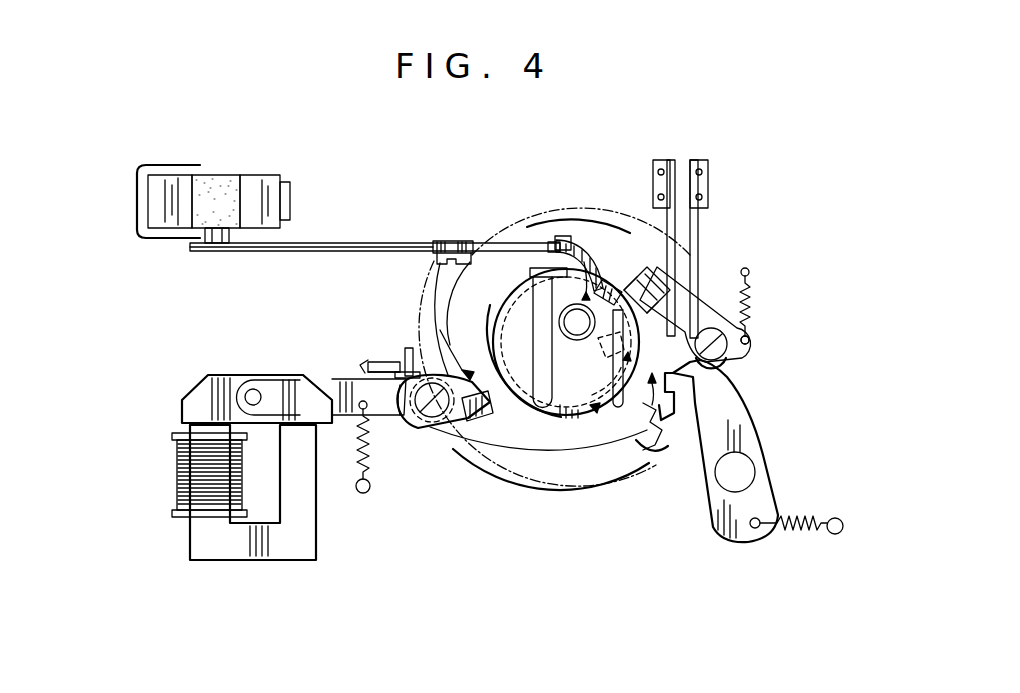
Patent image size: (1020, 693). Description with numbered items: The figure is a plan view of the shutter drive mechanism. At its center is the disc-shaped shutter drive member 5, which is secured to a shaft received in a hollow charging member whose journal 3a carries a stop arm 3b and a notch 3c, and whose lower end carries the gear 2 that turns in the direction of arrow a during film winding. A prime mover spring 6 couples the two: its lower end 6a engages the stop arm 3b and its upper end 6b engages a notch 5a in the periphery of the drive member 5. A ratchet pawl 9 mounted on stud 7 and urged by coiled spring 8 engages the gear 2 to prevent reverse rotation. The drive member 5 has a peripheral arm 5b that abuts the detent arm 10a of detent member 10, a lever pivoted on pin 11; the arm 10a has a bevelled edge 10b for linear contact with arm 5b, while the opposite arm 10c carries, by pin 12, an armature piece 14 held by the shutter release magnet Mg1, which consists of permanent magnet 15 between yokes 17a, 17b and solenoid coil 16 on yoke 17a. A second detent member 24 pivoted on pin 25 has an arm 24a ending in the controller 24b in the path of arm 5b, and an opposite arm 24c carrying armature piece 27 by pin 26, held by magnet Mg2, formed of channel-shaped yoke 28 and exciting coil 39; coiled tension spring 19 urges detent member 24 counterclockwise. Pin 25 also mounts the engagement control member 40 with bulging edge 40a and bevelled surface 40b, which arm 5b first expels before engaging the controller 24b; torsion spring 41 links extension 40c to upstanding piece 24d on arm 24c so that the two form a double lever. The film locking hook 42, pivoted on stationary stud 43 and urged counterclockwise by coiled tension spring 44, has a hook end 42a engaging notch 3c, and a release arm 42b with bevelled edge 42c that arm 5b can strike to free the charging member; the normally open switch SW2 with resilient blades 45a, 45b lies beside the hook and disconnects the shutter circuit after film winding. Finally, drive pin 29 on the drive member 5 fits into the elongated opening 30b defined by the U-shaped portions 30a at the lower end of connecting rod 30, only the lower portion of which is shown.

The gear 2 is at (677, 413).
The journal 3a is at (537, 452).
The stop arm 3b is at (598, 270).
The notch 3c is at (604, 278).
The shutter drive member 5 is at (518, 392).
The notch 5a is at (612, 374).
The arm 5b is at (562, 236).
The prime mover spring 6 is at (548, 358).
The lower end of spring 6a is at (578, 242).
The upper end of spring 6b is at (608, 348).
The stud 7 is at (756, 472).
The coiled spring 8 is at (802, 531).
The ratchet pawl 9 is at (730, 451).
The detent member 10 is at (375, 241).
The detent arm 10a is at (470, 223).
The edge 10b is at (552, 242).
The arm 10c is at (314, 252).
The pin 11 is at (438, 259).
The pin 12 is at (219, 244).
The armature piece 14 is at (291, 198).
The permanent magnet 15 is at (228, 180).
The solenoid coil 16 is at (140, 200).
The yoke 17a is at (152, 212).
The yoke 17b is at (266, 180).
The coiled tension spring 19 is at (347, 450).
The detent member 24 is at (346, 416).
The arm 24a is at (470, 442).
The controller 24b is at (502, 458).
The arm 24c is at (292, 378).
The upstanding piece 24d is at (375, 366).
The pin 25 is at (418, 420).
The pin 26 is at (251, 390).
The armature piece 27 is at (196, 396).
The channel-shaped yoke 28 is at (194, 542).
The drive pin 29 is at (560, 323).
The connecting rod 30 is at (530, 272).
The U-shaped portions 30a is at (624, 468).
The elongated opening 30b is at (656, 452).
The exciting coil 39 is at (182, 462).
The engagement control member 40 is at (432, 430).
The bulging edge 40a is at (408, 372).
The bevelled surface 40b is at (409, 348).
The extension 40c is at (386, 362).
The torsion spring 41 is at (400, 408).
The film locking hook 42 is at (687, 287).
The hook end 42a is at (645, 267).
The release arm 42b is at (672, 290).
The bevelled edge 42c is at (678, 270).
The stationary stud 43 is at (736, 360).
The coiled tension spring 44 is at (752, 302).
The resilient blade 45a is at (670, 160).
The resilient blade 45b is at (698, 205).
The arrow a is at (652, 426).
The switch SW2 is at (709, 233).
The shutter release magnet Mg1 is at (238, 174).
The magnet Mg2 is at (258, 566).